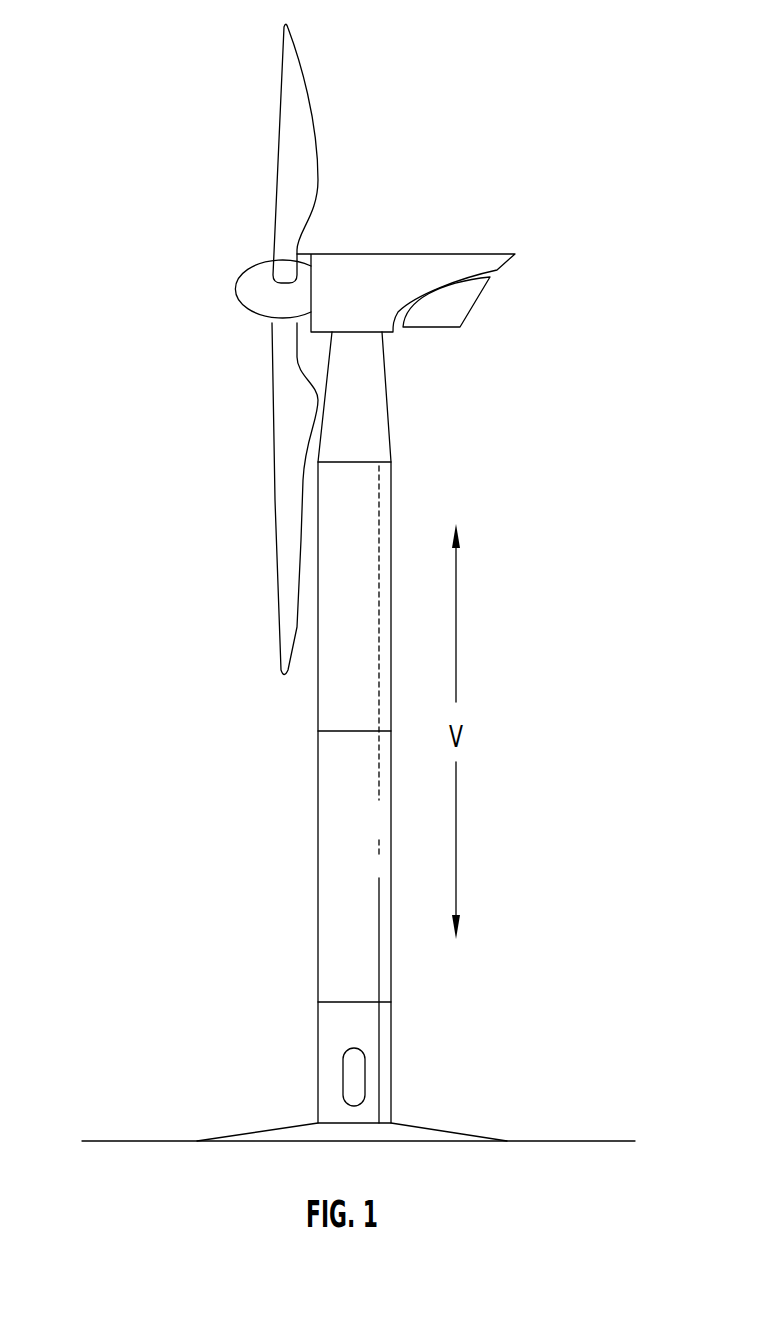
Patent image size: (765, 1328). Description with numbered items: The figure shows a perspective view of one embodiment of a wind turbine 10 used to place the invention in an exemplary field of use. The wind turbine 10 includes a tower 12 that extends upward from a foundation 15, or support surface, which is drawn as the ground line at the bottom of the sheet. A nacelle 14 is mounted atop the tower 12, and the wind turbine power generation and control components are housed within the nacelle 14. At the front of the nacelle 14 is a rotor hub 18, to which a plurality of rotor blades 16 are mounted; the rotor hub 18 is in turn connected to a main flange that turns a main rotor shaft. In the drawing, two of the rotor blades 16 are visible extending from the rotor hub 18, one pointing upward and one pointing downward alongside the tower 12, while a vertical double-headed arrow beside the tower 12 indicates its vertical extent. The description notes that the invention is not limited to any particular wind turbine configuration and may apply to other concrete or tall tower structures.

The wind turbine 10 is at (150, 128).
The tower 12 is at (328, 830).
The nacelle 14 is at (398, 265).
The foundation 15 is at (122, 1141).
The rotor blade 16 is at (287, 133).
The rotor hub 18 is at (245, 285).